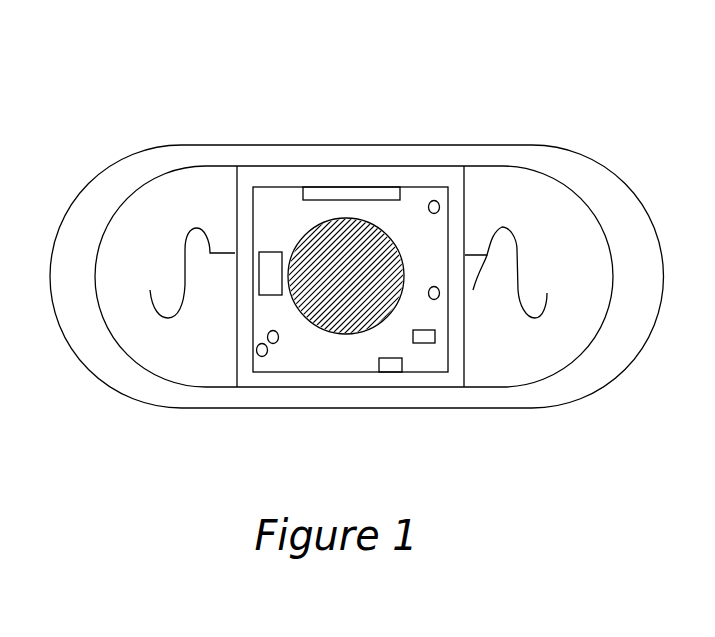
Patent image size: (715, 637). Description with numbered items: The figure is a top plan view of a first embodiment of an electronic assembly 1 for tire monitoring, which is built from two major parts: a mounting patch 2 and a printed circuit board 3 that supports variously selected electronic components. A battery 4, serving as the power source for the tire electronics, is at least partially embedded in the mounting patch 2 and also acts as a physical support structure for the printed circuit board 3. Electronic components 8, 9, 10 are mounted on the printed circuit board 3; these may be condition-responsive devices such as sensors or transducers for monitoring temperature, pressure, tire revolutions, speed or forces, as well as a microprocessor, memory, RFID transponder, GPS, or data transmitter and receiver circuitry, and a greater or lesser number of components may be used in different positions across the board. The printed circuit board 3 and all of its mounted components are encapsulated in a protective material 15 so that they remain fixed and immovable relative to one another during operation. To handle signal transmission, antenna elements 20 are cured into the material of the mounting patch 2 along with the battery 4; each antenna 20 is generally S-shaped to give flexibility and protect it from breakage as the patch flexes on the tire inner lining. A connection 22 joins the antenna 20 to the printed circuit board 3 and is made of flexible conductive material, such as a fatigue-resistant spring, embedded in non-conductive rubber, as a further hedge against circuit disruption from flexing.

The electronic assembly 1 is at (625, 138).
The mounting patch 2 is at (648, 211).
The printed circuit board 3 is at (283, 187).
The battery 4 is at (393, 250).
The electronic component 8 is at (263, 252).
The electronic component 9 is at (256, 352).
The electronic component 10 is at (380, 365).
The protective material 15 is at (445, 387).
The antenna element 20 is at (150, 304).
The connection 22 is at (473, 290).